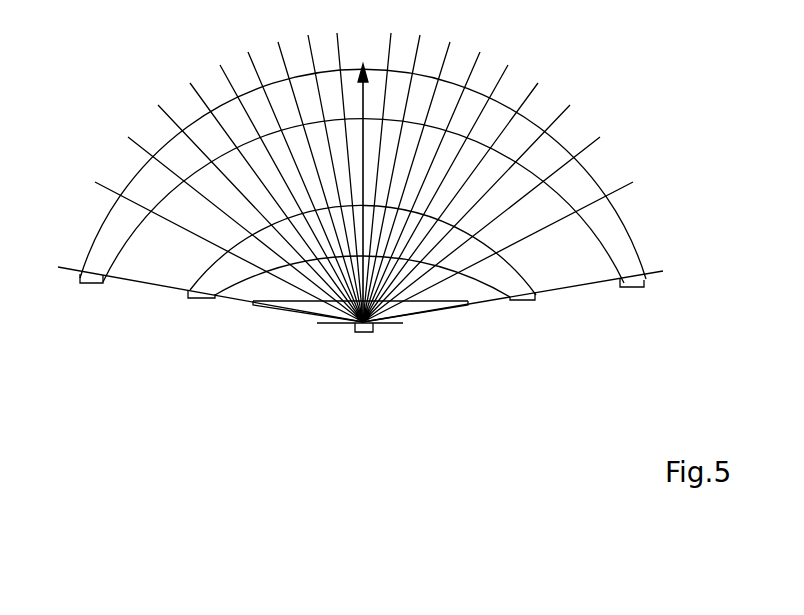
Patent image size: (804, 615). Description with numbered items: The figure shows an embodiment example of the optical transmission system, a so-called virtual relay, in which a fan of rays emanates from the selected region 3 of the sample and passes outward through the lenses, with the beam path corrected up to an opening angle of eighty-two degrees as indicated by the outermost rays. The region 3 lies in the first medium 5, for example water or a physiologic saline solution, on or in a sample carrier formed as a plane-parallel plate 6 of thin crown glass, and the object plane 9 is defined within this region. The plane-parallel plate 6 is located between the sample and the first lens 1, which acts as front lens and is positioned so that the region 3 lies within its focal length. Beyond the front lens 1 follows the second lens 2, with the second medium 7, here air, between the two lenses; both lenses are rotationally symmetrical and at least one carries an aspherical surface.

The first lens 1 is at (195, 299).
The second lens 2 is at (92, 285).
The selected region 3 is at (363, 333).
The first medium 5 is at (245, 297).
The plane-parallel plate 6 is at (467, 307).
The second medium 7 is at (162, 270).
The object plane 9 is at (392, 326).